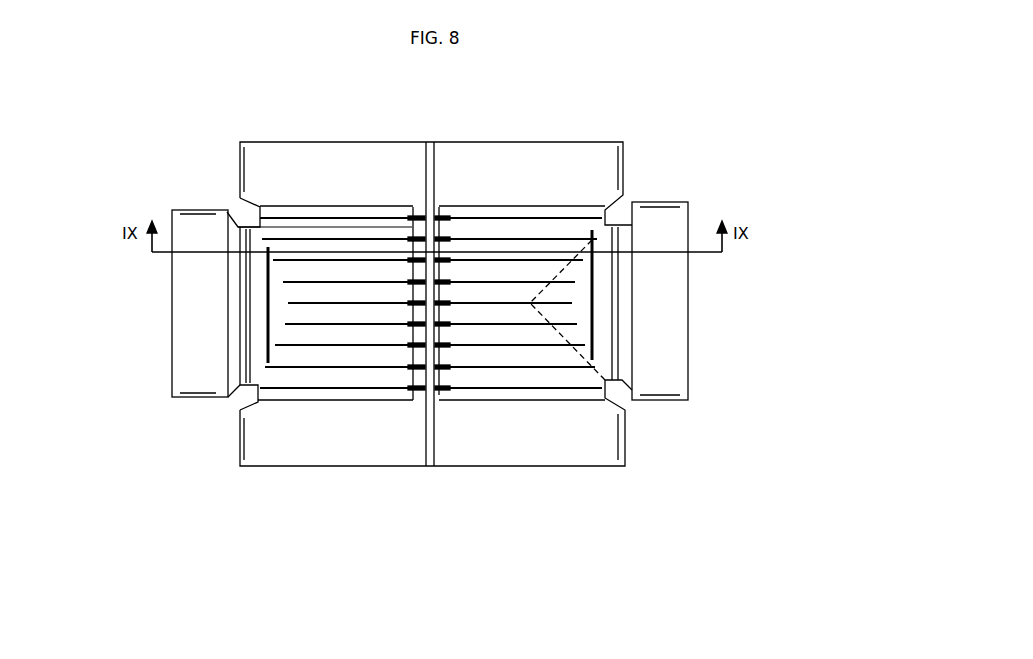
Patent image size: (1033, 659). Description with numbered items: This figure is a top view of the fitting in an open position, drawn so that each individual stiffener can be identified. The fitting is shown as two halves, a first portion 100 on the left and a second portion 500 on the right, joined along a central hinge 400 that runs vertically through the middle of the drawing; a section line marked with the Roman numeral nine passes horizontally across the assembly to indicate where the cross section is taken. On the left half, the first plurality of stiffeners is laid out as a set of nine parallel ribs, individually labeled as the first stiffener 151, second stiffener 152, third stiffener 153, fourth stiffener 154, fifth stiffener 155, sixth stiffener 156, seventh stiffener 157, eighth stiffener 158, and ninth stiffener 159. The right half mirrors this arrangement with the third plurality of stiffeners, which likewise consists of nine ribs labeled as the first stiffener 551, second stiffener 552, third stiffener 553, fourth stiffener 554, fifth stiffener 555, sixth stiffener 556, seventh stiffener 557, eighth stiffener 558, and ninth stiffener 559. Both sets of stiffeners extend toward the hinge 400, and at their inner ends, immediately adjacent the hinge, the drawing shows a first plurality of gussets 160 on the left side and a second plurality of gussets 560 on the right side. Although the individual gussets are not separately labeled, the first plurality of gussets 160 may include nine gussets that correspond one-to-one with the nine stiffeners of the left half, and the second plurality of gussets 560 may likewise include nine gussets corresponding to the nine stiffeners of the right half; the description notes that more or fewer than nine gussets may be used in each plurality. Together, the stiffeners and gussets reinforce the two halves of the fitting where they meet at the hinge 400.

The first connector 100 is at (132, 300).
The second connector 500 is at (727, 268).
The hinge 400 is at (430, 470).
The first plurality of gussets 160 is at (418, 196).
The second plurality of gussets 560 is at (438, 196).
The first stiffener 151 is at (275, 388).
The second stiffener 152 is at (295, 367).
The third stiffener 153 is at (317, 345).
The fourth stiffener 154 is at (342, 323).
The fifth stiffener 155 is at (357, 303).
The sixth stiffener 156 is at (293, 283).
The seventh stiffener 157 is at (310, 258).
The eighth stiffener 158 is at (322, 238).
The ninth stiffener 159 is at (338, 217).
The first stiffener 551 is at (595, 388).
The second stiffener 552 is at (578, 367).
The third stiffener 553 is at (557, 345).
The fourth stiffener 554 is at (533, 323).
The fifth stiffener 555 is at (517, 303).
The sixth stiffener 556 is at (567, 282).
The seventh stiffener 557 is at (553, 258).
The eighth stiffener 558 is at (538, 238).
The ninth stiffener 559 is at (525, 212).